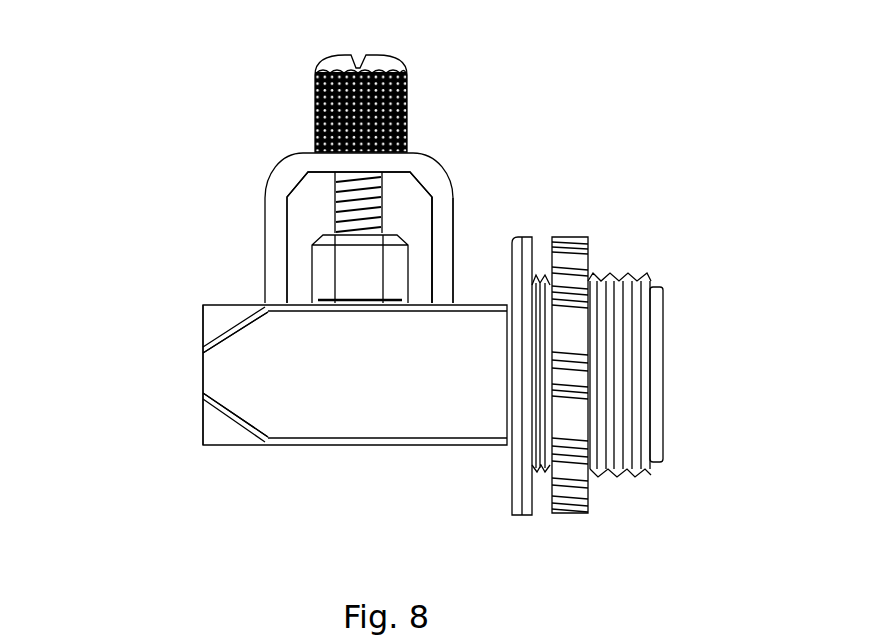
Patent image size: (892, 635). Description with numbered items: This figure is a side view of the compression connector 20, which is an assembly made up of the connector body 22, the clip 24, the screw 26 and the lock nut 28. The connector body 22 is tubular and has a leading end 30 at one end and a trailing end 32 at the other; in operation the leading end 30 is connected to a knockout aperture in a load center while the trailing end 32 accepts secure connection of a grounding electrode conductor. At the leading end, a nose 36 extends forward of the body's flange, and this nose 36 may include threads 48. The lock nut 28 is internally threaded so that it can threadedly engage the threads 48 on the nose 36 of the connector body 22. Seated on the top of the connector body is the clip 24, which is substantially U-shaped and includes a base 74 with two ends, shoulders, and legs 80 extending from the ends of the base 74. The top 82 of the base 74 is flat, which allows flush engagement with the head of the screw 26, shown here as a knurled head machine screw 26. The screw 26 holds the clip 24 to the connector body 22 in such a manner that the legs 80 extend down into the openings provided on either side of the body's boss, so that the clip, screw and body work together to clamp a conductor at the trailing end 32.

The compression connector 20 is at (118, 106).
The connector body 22 is at (345, 446).
The clip 24 is at (433, 166).
The screw 26 is at (315, 104).
The lock nut 28 is at (568, 237).
The leading end 30 is at (663, 378).
The trailing end 32 is at (203, 378).
The nose 36 is at (647, 468).
The threads 48 is at (625, 272).
The base 74 is at (325, 165).
The legs 80 is at (444, 258).
The top 82 is at (420, 140).